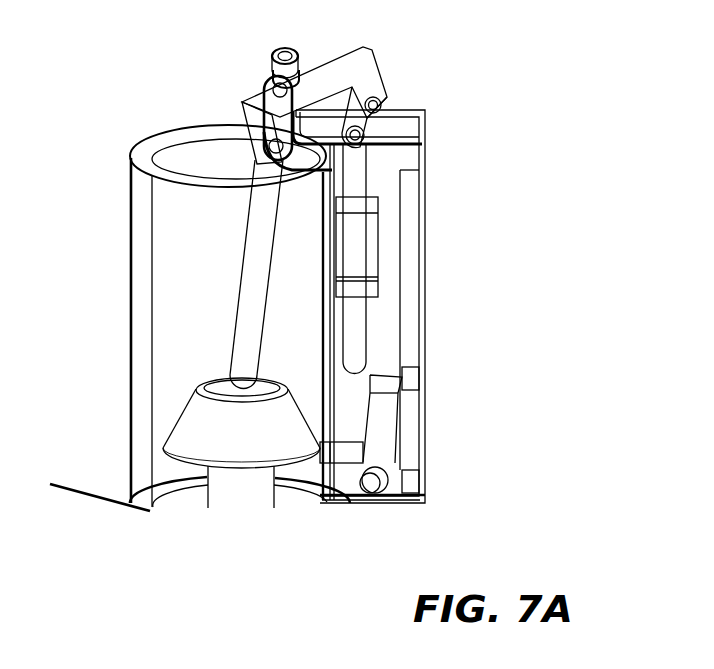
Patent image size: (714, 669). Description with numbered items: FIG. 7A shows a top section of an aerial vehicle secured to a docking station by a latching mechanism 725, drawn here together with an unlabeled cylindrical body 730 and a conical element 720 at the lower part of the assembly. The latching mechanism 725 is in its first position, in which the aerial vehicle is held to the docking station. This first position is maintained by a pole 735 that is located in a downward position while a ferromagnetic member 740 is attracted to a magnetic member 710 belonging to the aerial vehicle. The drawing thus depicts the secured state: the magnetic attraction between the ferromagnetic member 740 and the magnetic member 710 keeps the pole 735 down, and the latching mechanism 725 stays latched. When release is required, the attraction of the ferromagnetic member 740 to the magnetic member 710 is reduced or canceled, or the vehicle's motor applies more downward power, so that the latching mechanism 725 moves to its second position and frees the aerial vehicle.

The magnetic member 710 is at (225, 497).
The conical plunger 720 is at (177, 450).
The latching mechanism 725 is at (333, 497).
The cylindrical container 730 is at (173, 270).
The pole 735 is at (357, 356).
The ferromagnetic member 740 is at (268, 212).